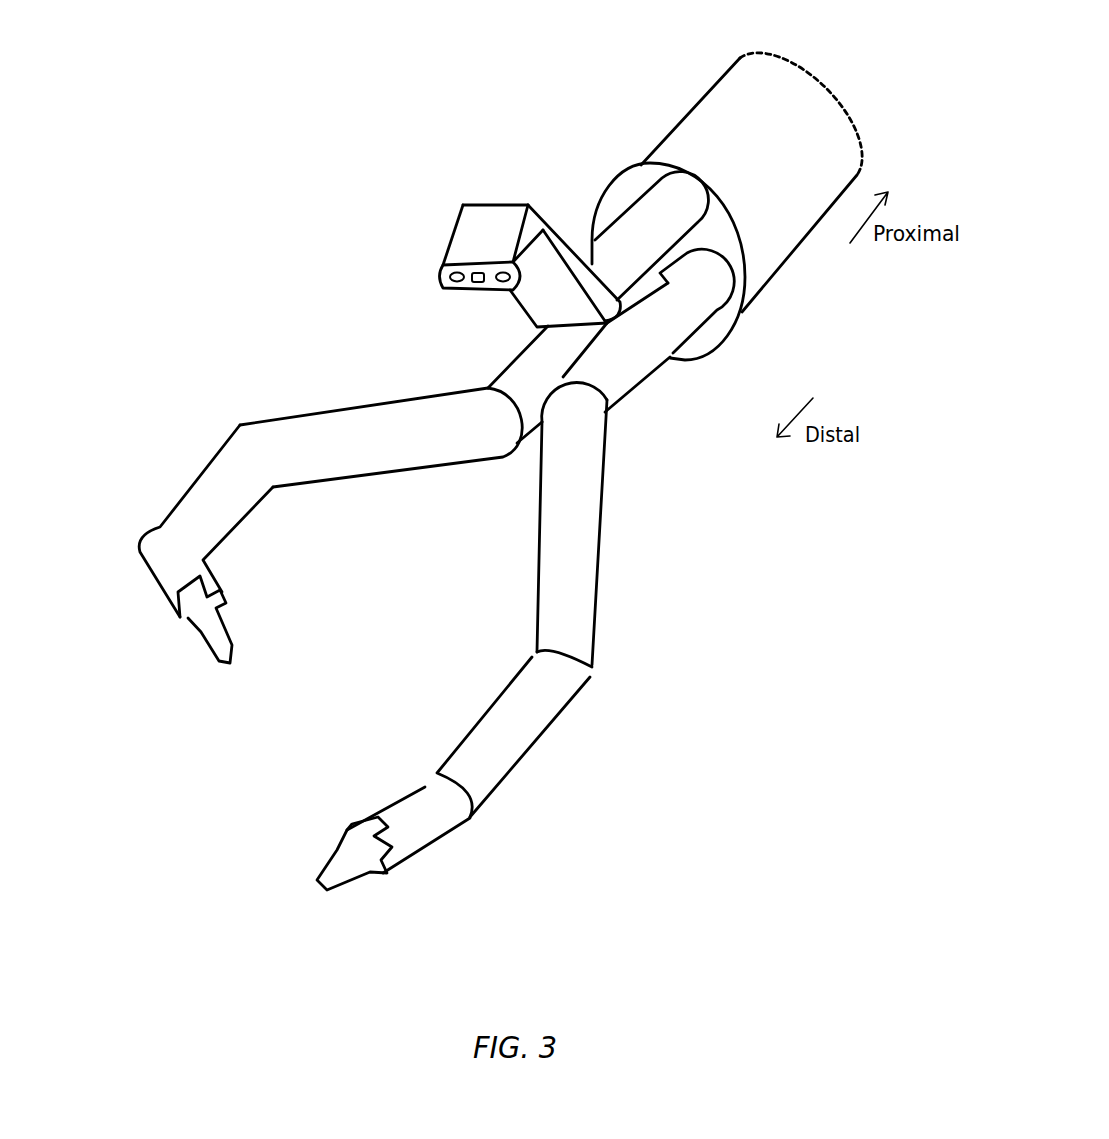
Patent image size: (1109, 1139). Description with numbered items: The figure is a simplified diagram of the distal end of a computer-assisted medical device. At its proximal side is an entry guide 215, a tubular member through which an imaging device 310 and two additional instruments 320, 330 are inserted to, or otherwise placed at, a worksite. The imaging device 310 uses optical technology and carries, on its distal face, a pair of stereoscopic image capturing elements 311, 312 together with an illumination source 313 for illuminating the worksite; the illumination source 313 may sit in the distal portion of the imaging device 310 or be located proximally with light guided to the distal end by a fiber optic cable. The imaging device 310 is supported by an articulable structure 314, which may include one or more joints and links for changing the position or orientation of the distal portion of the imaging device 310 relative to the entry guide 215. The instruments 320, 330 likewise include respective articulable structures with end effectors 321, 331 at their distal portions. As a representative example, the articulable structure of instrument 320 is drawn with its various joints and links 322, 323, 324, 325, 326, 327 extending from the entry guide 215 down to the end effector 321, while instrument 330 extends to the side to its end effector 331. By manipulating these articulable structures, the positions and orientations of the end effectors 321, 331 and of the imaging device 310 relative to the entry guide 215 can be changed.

The entry guide 215 is at (790, 241).
The imaging device 310 is at (476, 284).
The stereoscopic image capturing element 311 is at (441, 285).
The stereoscopic image capturing element 312 is at (500, 295).
The illumination source 313 is at (471, 290).
The articulable structure 314 is at (563, 222).
The instrument 320 is at (484, 586).
The end effector 321 is at (322, 841).
The joint or link of articulable structure 322 is at (650, 356).
The joint or link of articulable structure 323 is at (587, 413).
The joint or link of articulable structure 324 is at (580, 552).
The joint or link of articulable structure 325 is at (582, 669).
The joint or link of articulable structure 326 is at (503, 708).
The joint or link of articulable structure 327 is at (441, 798).
The instrument 330 is at (285, 504).
The end effector 331 is at (134, 606).